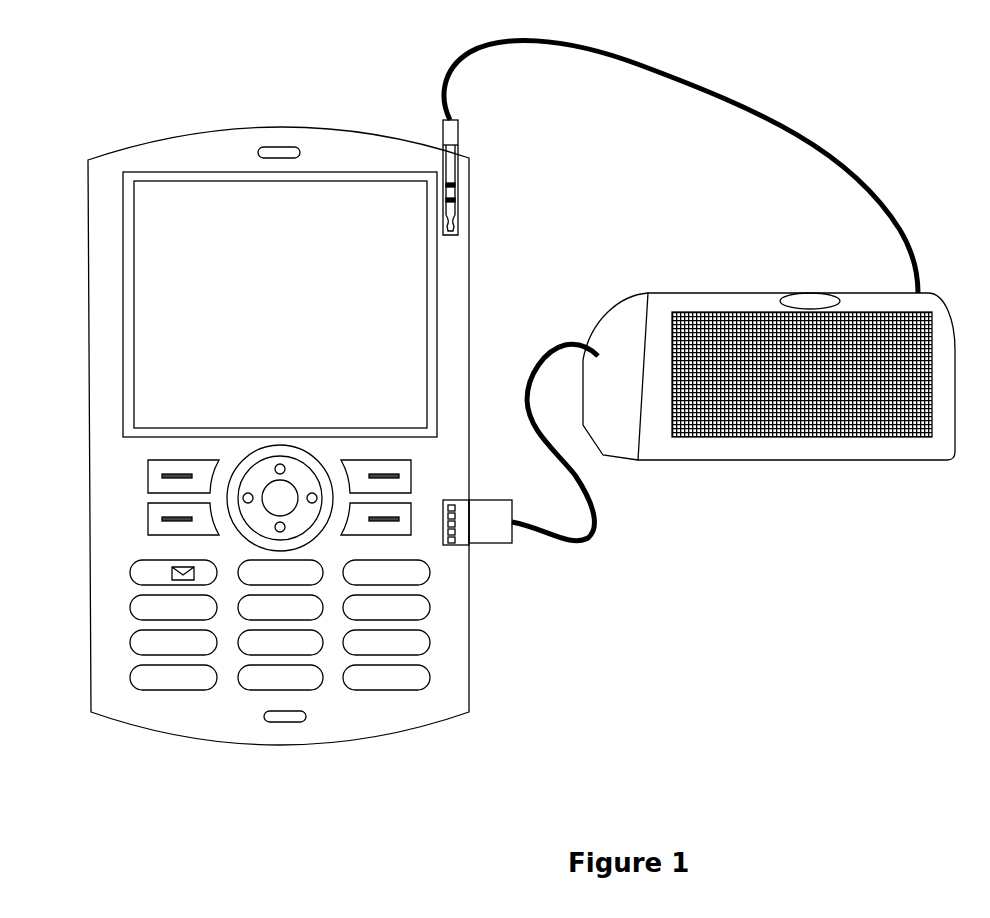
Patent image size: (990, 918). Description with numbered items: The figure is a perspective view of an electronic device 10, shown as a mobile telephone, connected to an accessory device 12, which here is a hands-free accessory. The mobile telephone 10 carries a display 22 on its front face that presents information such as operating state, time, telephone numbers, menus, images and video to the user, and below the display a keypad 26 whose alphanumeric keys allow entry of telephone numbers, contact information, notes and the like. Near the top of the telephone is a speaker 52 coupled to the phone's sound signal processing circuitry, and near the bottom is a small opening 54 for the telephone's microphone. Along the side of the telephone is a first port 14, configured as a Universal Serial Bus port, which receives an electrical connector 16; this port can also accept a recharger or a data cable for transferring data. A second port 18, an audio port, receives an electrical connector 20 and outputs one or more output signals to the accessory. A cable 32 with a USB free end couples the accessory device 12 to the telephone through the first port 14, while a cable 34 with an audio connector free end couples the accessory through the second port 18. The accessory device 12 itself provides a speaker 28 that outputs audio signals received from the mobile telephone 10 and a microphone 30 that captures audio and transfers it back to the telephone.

The electronic device 10 is at (118, 140).
The accessory device 12 is at (790, 278).
The first port 14 is at (461, 498).
The electrical connector 16 is at (515, 550).
The second port 18 is at (461, 238).
The electrical connector 20 is at (461, 125).
The display 22 is at (160, 298).
The keypad 26 is at (211, 705).
The speaker 28 is at (700, 300).
The microphone 30 is at (820, 298).
The cable 32 is at (556, 345).
The cable 34 is at (675, 85).
The speaker 52 is at (278, 152).
The microphone 54 is at (292, 714).